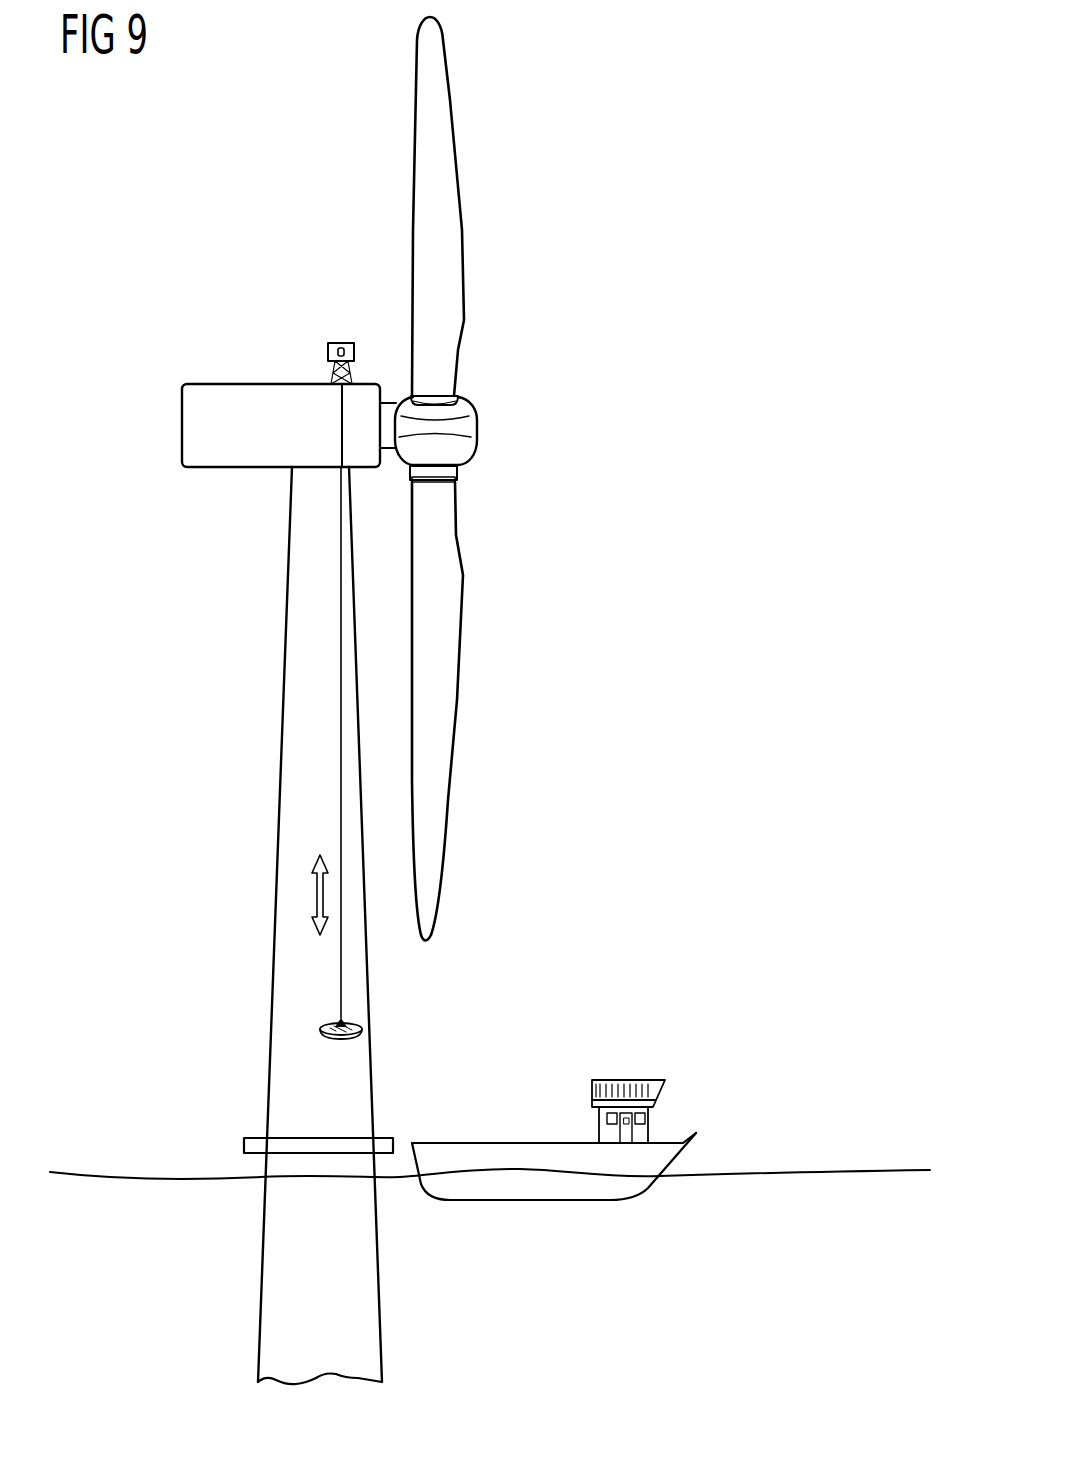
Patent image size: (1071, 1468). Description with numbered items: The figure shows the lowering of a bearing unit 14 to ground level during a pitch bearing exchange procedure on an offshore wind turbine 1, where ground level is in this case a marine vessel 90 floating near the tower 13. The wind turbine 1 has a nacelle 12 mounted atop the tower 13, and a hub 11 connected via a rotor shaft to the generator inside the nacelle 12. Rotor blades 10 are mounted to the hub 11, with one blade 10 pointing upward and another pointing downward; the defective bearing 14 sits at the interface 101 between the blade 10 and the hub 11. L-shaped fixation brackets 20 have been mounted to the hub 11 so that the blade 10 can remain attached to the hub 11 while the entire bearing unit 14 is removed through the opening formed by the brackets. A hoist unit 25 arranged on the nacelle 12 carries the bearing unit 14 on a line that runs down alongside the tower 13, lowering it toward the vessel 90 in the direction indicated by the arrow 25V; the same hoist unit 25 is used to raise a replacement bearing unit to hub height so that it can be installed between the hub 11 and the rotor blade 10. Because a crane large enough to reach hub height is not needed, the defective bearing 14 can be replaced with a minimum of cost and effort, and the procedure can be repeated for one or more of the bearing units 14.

The wind turbine 1 is at (212, 224).
The rotor blade 10 is at (450, 236).
The interface 101 is at (432, 396).
The hub 11 is at (472, 433).
The nacelle 12 is at (190, 418).
The tower 13 is at (298, 653).
The bearing unit 14 is at (467, 412).
The fixation bracket 20 is at (462, 482).
The hoist unit 25 is at (342, 343).
The hoist direction 25V is at (316, 893).
The marine vessel 90 is at (488, 1143).